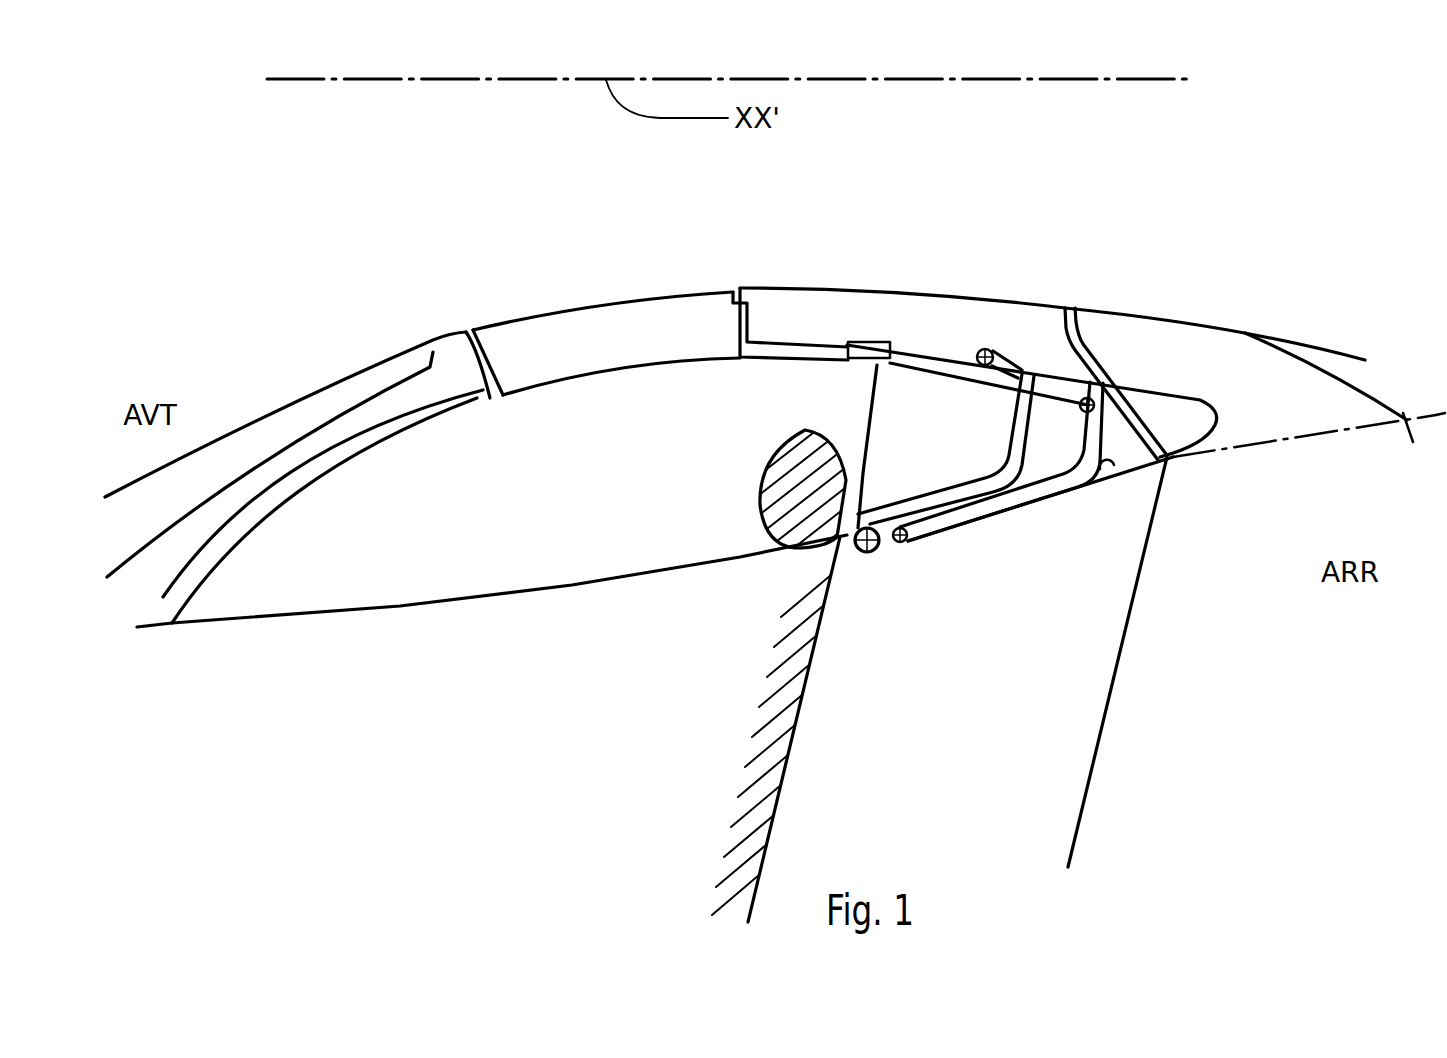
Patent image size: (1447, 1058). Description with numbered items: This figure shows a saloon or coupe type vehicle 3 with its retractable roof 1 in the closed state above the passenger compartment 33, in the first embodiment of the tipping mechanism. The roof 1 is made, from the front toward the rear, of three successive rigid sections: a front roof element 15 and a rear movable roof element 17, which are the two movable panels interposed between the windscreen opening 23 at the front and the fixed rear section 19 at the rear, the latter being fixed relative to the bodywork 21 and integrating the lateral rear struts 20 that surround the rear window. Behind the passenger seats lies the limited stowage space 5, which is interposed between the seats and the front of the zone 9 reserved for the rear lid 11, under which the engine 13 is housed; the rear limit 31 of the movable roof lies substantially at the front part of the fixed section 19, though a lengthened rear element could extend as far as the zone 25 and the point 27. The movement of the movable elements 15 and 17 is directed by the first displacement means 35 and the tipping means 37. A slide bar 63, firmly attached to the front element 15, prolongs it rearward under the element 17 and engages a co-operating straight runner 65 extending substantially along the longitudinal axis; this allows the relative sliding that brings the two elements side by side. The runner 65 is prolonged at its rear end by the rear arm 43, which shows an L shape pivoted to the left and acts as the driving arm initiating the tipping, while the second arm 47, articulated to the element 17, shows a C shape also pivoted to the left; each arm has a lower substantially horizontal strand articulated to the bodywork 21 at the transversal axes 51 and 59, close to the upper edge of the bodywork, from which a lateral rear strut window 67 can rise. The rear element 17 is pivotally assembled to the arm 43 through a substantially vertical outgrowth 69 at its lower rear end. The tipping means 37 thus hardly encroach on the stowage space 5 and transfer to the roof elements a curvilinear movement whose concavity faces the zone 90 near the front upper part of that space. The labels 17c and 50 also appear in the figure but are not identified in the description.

The retractable roof 1 is at (749, 282).
The vehicle 3 is at (321, 346).
The stowage space 5 is at (897, 770).
The rear lid zone 9 is at (1368, 690).
The rear lid 11 is at (1438, 411).
The engine 13 is at (1413, 513).
The front roof element 15 is at (570, 322).
The rear movable roof element 17 is at (895, 312).
The flap bulkhead 17c is at (1043, 367).
The rear fixed roof section 19 is at (1118, 328).
The lateral rear struts 20 is at (1250, 395).
The bodywork 21 is at (805, 668).
The windscreen opening 23 is at (438, 352).
The rear zone 25 is at (1284, 450).
The rear point 27 is at (1405, 413).
The rear limit 31 is at (1097, 767).
The passenger compartment 33 is at (655, 453).
The first displacement means 35 is at (812, 365).
The tipping means 37 is at (986, 535).
The rear arm 43 is at (1082, 458).
The second arm 47 is at (1012, 455).
The stop 50 is at (1115, 472).
The transversal articulation axis 51 is at (893, 547).
The transversal articulation axis 59 is at (851, 553).
The slide bar 63 is at (788, 343).
The runner 65 is at (937, 370).
The lateral rear strut window 67 is at (885, 438).
The outgrowth 69 is at (1095, 370).
The concavity zone 90 is at (837, 571).